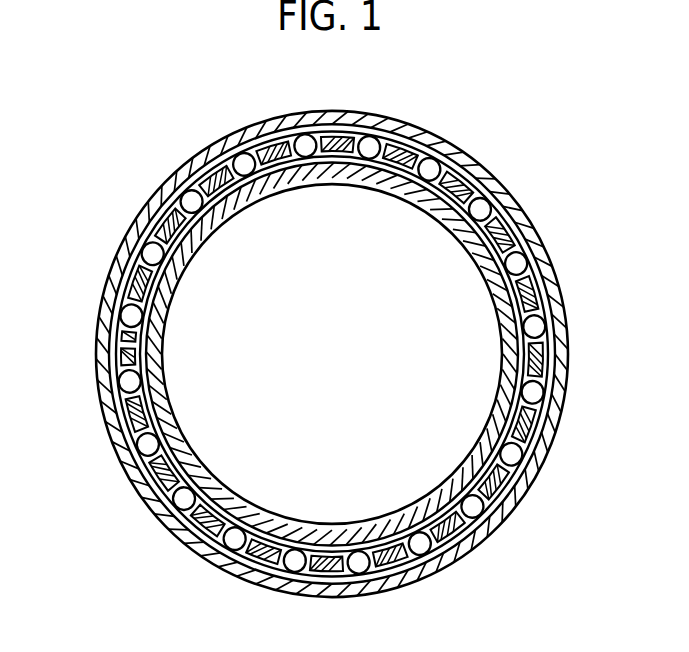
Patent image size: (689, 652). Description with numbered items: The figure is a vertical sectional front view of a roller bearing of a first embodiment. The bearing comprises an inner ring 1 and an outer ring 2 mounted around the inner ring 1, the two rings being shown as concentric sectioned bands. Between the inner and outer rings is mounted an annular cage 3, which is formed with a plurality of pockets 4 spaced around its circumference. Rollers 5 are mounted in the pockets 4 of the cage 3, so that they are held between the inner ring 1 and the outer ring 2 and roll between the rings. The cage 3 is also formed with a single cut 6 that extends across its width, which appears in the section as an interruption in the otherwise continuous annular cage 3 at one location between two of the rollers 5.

The inner ring 1 is at (482, 245).
The outer ring 2 is at (510, 205).
The annular cage 3 is at (208, 180).
The pockets 4 is at (243, 156).
The rollers 5 is at (226, 156).
The cut 6 is at (120, 350).